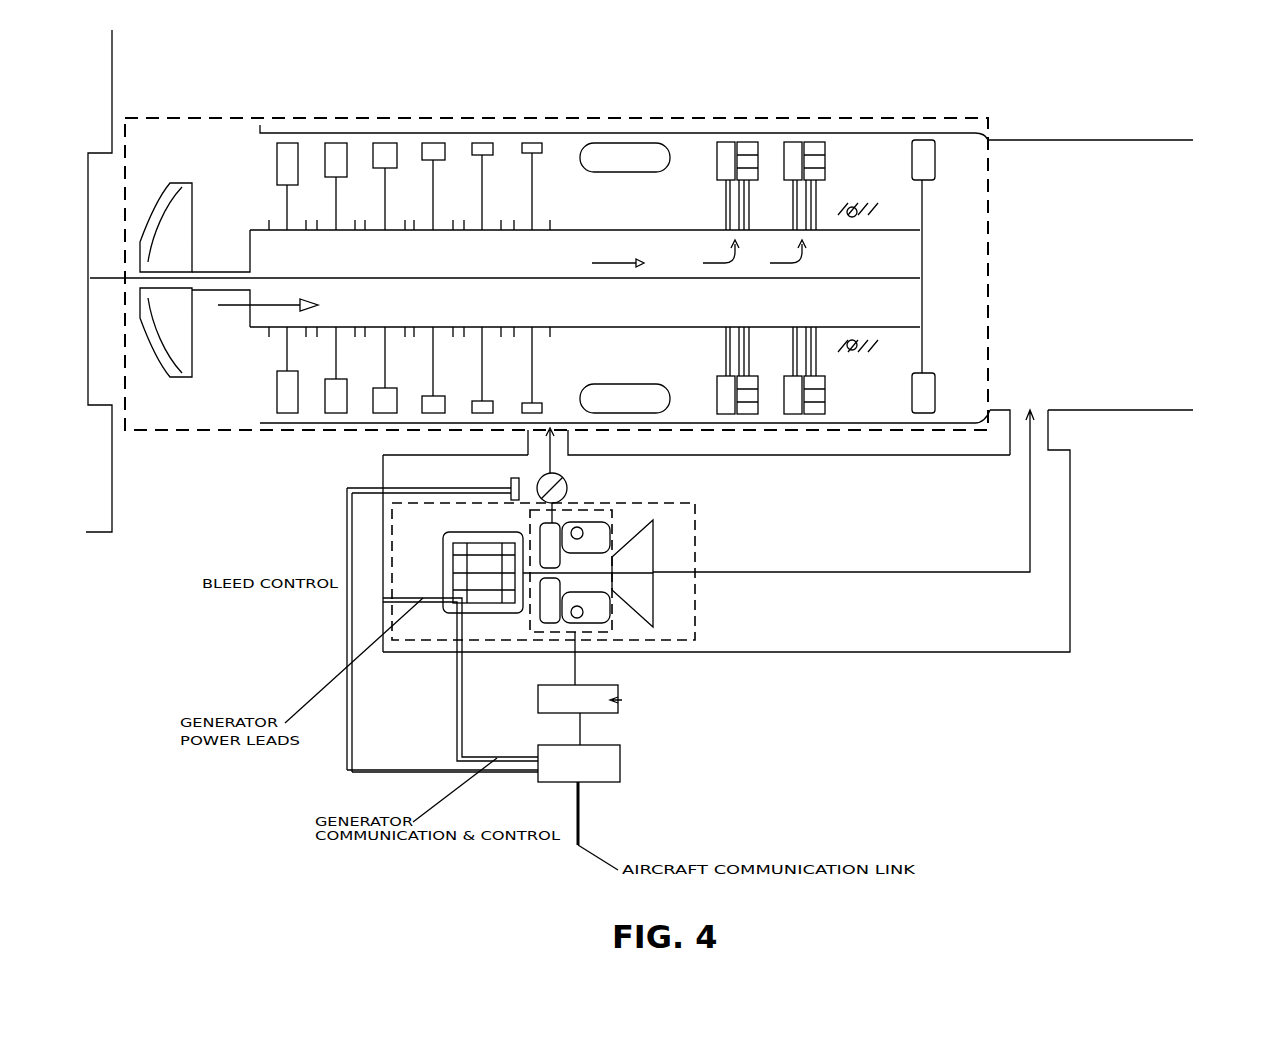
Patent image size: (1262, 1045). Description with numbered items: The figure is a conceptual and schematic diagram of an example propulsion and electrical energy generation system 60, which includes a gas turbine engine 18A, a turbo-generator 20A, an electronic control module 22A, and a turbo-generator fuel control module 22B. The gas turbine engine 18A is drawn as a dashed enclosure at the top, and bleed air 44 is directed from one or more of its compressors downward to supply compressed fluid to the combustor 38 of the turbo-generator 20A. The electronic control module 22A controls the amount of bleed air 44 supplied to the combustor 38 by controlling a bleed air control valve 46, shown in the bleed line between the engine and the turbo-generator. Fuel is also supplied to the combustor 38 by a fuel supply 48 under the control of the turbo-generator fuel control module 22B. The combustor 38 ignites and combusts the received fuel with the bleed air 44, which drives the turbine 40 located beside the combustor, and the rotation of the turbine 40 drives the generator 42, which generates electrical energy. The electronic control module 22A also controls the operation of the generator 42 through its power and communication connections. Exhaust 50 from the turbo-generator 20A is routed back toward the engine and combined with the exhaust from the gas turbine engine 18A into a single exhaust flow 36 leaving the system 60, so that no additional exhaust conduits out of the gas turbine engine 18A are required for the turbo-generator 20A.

The propulsion and electrical energy generation system 60 is at (1172, 100).
The gas turbine engine 18A is at (590, 112).
The single exhaust flow 36 is at (1082, 304).
The bleed air 44 is at (550, 458).
The bleed air control valve 46 is at (567, 485).
The generator 42 is at (448, 558).
The combustor 38 is at (613, 518).
The turbo-generator 20A is at (697, 548).
The turbine 40 is at (653, 603).
The exhaust 50 is at (988, 567).
The fuel supply 48 is at (656, 703).
The electronic control module 22A is at (617, 762).
The turbo-generator fuel control module 22B is at (617, 713).